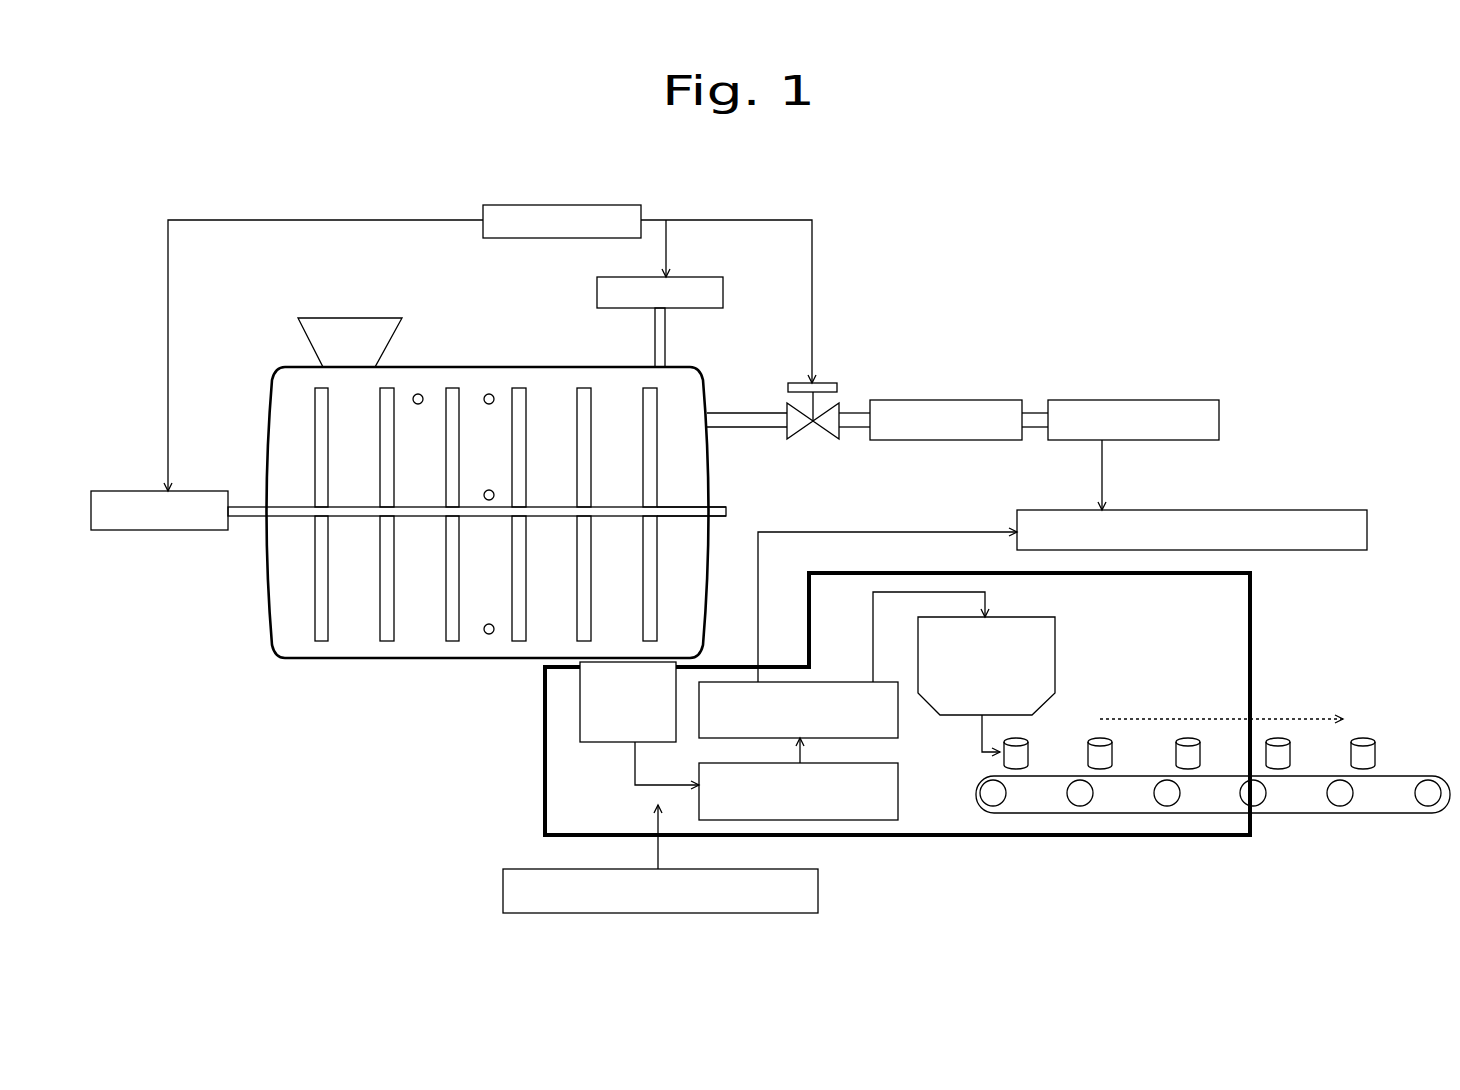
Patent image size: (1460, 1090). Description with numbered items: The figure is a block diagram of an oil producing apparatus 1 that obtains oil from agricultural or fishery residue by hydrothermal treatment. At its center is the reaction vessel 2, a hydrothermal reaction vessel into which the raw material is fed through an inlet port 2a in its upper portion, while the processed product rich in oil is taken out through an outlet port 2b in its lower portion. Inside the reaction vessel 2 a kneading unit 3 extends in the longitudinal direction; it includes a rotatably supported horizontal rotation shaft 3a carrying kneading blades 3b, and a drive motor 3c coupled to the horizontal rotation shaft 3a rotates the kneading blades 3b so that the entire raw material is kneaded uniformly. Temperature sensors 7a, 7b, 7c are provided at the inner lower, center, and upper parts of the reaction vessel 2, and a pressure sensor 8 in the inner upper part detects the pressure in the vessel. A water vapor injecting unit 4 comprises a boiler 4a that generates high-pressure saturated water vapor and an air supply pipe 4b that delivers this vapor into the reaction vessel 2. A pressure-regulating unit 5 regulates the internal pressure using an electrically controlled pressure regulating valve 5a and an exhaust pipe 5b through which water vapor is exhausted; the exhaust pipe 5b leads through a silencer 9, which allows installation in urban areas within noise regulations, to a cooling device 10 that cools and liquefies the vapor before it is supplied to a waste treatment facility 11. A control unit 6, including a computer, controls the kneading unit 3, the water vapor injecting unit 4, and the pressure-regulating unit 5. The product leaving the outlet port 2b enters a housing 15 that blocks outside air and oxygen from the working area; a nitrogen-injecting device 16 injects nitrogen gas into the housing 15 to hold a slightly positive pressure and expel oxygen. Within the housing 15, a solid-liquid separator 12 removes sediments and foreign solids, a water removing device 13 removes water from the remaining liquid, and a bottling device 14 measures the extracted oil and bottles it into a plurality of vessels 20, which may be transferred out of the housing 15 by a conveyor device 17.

The oil producing apparatus 1 is at (145, 179).
The reaction vessel 2 is at (270, 388).
The inlet port 2a is at (382, 337).
The outlet port 2b is at (625, 742).
The kneading unit 3 is at (280, 527).
The horizontal rotation shaft 3a is at (680, 505).
The kneading blades 3b is at (380, 485).
The drive motor 3c is at (140, 491).
The water vapor injecting unit 4 is at (694, 295).
The boiler 4a is at (723, 287).
The air supply pipe 4b is at (655, 362).
The pressure-regulating unit 5 is at (797, 408).
The pressure regulating valve 5a is at (822, 383).
The exhaust pipe 5b is at (848, 412).
The control unit 6 is at (567, 205).
The temperature sensor 7a is at (489, 624).
The temperature sensor 7b is at (495, 494).
The temperature sensor 7c is at (489, 394).
The pressure sensor 8 is at (418, 404).
The silencer 9 is at (972, 400).
The cooling device 10 is at (1094, 400).
The waste treatment facility 11 is at (1170, 510).
The solid-liquid separator 12 is at (898, 793).
The water removing device 13 is at (898, 712).
The bottling device 14 is at (1055, 645).
The housing 15 is at (1253, 600).
The nitrogen-injecting device 16 is at (818, 890).
The conveyor device 17 is at (1398, 813).
The vessels 20 is at (1088, 753).